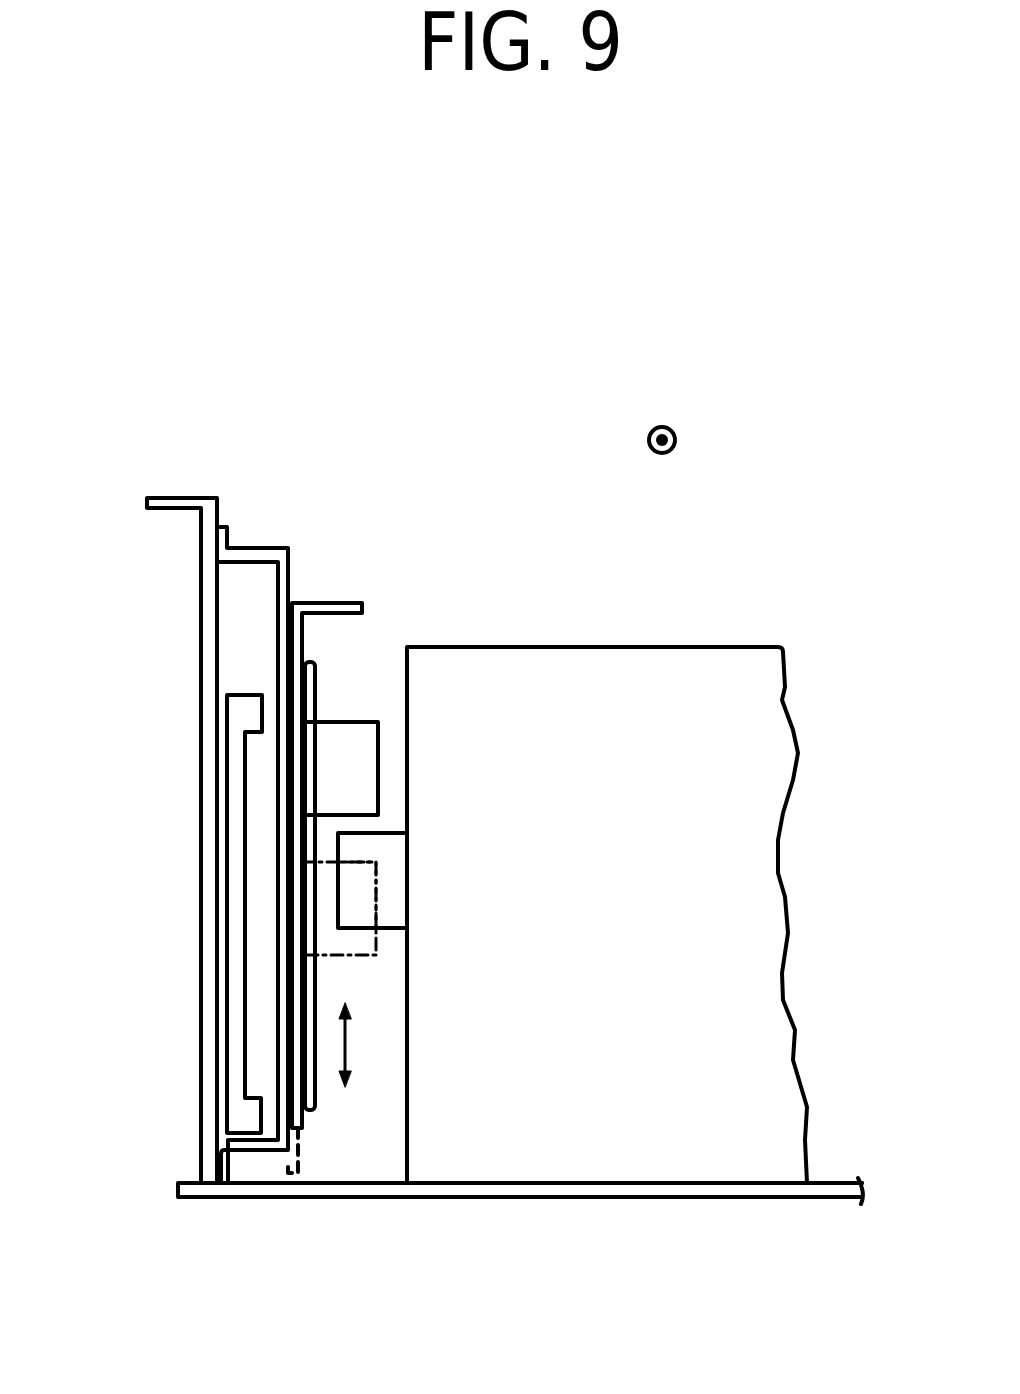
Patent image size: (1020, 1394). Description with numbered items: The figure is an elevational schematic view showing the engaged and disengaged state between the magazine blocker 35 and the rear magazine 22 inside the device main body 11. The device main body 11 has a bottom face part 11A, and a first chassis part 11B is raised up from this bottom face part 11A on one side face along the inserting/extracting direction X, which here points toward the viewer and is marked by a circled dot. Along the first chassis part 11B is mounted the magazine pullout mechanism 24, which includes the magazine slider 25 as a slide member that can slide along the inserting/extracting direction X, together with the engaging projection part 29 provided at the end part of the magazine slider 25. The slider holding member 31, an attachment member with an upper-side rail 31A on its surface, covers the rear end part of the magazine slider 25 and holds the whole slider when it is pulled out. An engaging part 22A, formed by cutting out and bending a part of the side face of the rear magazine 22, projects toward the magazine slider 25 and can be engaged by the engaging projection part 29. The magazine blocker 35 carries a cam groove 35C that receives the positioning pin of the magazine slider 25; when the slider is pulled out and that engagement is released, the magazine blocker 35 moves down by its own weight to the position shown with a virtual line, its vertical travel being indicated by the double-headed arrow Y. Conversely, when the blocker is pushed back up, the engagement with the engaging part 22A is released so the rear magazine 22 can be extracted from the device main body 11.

The device main body 11 is at (528, 1200).
The bottom face part 11A is at (767, 1190).
The first chassis part 11B is at (183, 500).
The rear magazine 22 is at (660, 690).
The engaging part 22A is at (388, 852).
The magazine pullout mechanism 24 is at (383, 903).
The magazine slider 25 is at (237, 1042).
The engaging projection part 29 is at (365, 748).
The slider holding member 31 is at (241, 550).
The upper-side rail 31A is at (312, 683).
The magazine blocker 35 is at (317, 605).
The cam groove 35C is at (300, 833).
The inserting/extracting direction X is at (662, 423).
The Y direction Y is at (347, 1047).